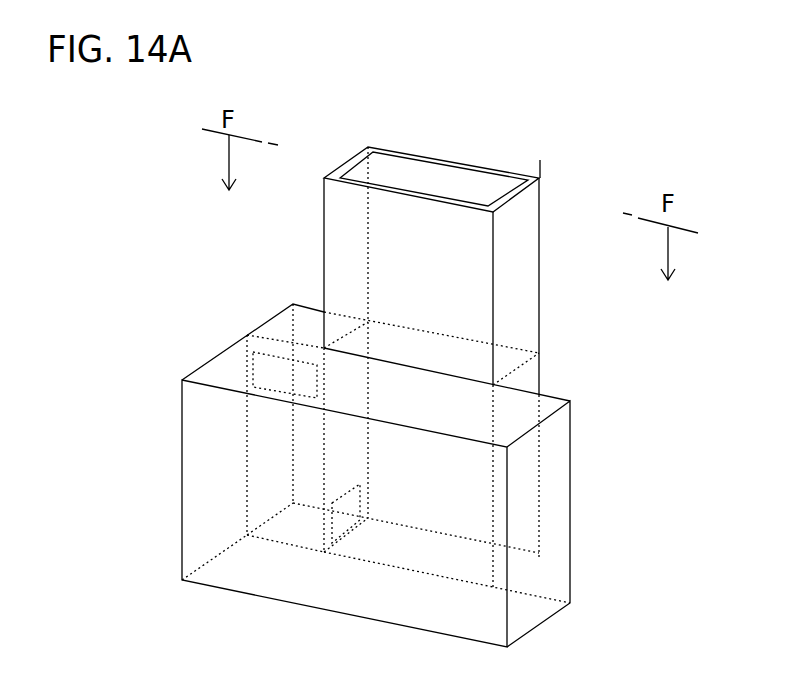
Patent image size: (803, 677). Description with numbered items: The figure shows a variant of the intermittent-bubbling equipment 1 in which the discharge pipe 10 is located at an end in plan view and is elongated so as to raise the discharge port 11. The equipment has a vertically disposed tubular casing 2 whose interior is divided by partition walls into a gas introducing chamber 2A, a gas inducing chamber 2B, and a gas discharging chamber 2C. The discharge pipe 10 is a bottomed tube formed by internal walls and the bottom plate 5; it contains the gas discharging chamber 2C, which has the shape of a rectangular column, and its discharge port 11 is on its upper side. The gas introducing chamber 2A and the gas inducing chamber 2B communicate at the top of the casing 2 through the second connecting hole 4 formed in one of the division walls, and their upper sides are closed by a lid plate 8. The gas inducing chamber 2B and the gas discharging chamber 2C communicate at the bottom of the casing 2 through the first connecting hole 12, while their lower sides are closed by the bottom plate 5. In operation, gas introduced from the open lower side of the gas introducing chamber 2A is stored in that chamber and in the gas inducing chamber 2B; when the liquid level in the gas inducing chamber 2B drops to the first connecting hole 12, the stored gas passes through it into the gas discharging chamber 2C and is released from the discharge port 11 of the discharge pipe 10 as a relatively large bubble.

The intermittent-bubbling equipment 1 is at (423, 361).
The casing 2 is at (390, 448).
The gas introducing chamber 2A is at (549, 471).
The gas inducing chamber 2B is at (267, 500).
The gas discharging chamber 2C is at (362, 216).
The second connecting hole 4 is at (253, 378).
The bottom plate 5 is at (285, 527).
The lid plate 8 is at (287, 318).
The discharge pipe 10 is at (437, 160).
The discharge port 11 is at (393, 152).
The first connecting hole 12 is at (327, 553).